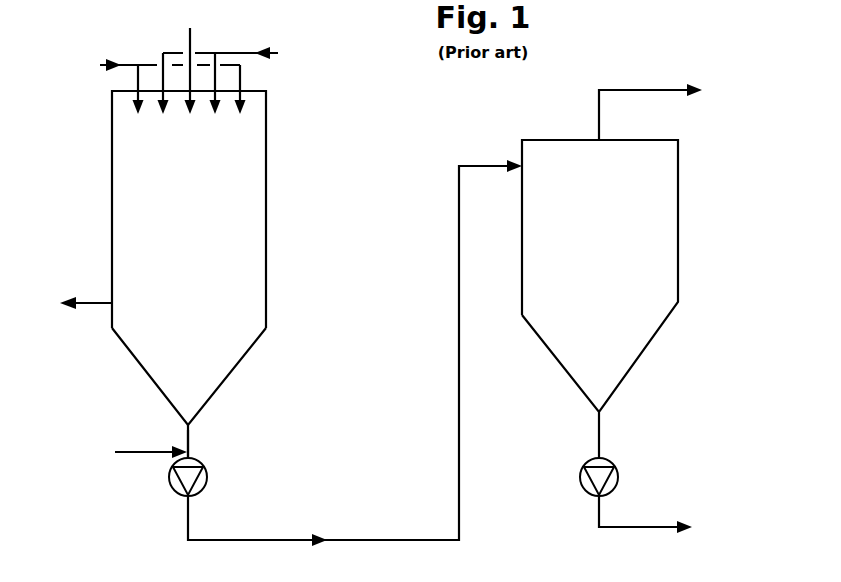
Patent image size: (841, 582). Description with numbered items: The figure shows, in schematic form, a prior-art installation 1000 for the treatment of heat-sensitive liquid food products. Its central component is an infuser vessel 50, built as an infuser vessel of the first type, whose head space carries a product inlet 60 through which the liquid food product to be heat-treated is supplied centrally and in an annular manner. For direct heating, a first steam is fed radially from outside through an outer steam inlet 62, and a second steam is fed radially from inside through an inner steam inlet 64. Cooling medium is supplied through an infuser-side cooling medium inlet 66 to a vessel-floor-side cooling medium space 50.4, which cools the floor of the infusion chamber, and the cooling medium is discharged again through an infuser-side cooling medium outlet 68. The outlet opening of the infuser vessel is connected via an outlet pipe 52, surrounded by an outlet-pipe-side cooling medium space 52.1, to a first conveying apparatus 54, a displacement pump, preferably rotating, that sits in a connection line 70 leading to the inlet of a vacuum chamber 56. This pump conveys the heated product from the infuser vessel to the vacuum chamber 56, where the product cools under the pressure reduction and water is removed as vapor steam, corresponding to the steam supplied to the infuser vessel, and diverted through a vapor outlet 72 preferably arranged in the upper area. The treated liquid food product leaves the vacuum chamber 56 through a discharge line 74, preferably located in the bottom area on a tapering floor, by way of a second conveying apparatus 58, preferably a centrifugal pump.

The installation 1000 is at (376, 191).
The infuser vessel 50 is at (152, 258).
The vessel-floor-side cooling medium space 50.4 is at (140, 376).
The outlet pipe 52 is at (188, 445).
The outlet-pipe-side cooling medium space 52.1 is at (176, 435).
The first conveying apparatus 54 is at (187, 470).
The vacuum chamber 56 is at (600, 299).
The second conveying apparatus 58 is at (599, 468).
The product inlet 60 is at (240, 53).
The outer steam inlet 62 is at (130, 65).
The inner steam inlet 64 is at (190, 43).
The infuser-side cooling medium inlet 66 is at (153, 452).
The infuser-side cooling medium outlet 68 is at (90, 303).
The connection line 70 is at (385, 539).
The vapor outlet 72 is at (640, 90).
The discharge line 74 is at (625, 527).